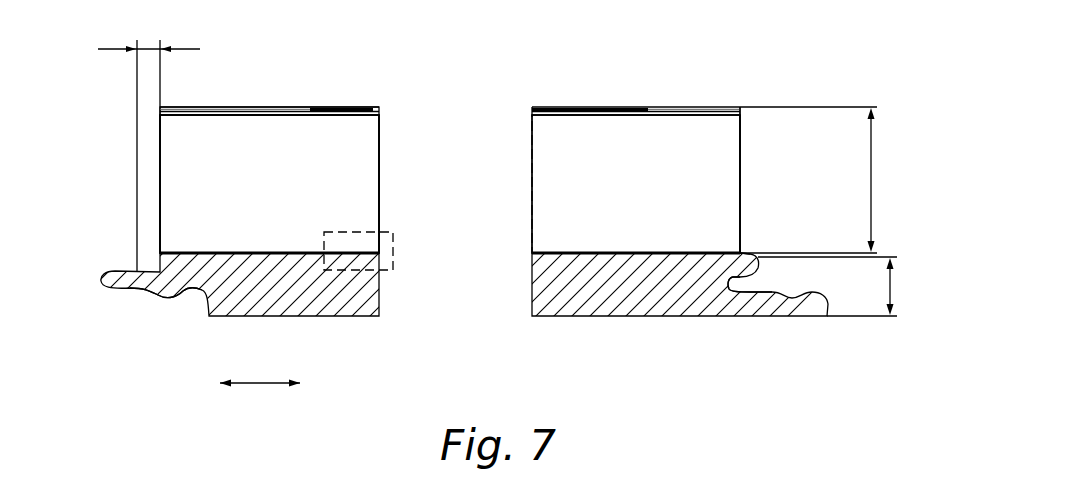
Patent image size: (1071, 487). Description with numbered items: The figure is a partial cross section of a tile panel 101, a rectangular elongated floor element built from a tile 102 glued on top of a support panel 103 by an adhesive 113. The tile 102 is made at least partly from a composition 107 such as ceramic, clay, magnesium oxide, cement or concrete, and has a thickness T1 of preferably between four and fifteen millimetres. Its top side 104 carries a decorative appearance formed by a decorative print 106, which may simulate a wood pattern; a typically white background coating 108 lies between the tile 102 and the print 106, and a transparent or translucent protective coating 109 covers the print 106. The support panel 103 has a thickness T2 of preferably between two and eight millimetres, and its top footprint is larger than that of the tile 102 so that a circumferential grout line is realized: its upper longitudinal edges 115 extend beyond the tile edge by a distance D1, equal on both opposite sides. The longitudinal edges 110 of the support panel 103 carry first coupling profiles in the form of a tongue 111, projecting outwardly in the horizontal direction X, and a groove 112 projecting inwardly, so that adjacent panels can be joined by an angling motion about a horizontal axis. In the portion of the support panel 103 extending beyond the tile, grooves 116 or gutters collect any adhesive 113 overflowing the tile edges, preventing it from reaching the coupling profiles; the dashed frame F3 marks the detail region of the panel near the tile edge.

The tile panel 101 is at (261, 90).
The tile 102 is at (170, 140).
The support panel 103 is at (645, 282).
The top side 104 is at (374, 108).
The decorative print 106 is at (343, 106).
The composition 107 is at (183, 213).
The background coating 108 is at (532, 113).
The protective coating 109 is at (532, 109).
The longitudinal edges 110 is at (112, 299).
The tongue 111 is at (163, 289).
The groove 112 is at (780, 273).
The adhesive 113 is at (532, 253).
The upper longitudinal edges 115 is at (158, 253).
The grooves 116 is at (741, 254).
The distance D1 is at (149, 48).
The thickness of the tile T1 is at (872, 178).
The thickness of the support panel T2 is at (893, 288).
The horizontal direction X is at (258, 382).
The detail region F3 is at (394, 251).